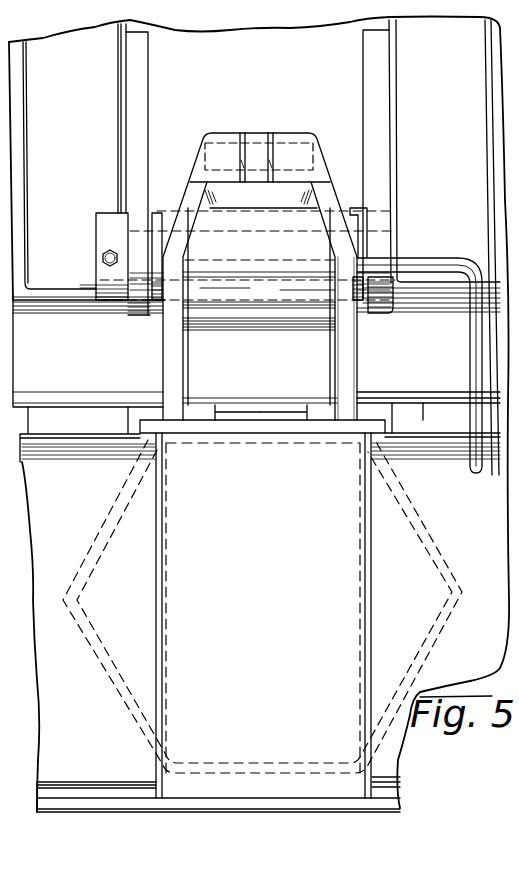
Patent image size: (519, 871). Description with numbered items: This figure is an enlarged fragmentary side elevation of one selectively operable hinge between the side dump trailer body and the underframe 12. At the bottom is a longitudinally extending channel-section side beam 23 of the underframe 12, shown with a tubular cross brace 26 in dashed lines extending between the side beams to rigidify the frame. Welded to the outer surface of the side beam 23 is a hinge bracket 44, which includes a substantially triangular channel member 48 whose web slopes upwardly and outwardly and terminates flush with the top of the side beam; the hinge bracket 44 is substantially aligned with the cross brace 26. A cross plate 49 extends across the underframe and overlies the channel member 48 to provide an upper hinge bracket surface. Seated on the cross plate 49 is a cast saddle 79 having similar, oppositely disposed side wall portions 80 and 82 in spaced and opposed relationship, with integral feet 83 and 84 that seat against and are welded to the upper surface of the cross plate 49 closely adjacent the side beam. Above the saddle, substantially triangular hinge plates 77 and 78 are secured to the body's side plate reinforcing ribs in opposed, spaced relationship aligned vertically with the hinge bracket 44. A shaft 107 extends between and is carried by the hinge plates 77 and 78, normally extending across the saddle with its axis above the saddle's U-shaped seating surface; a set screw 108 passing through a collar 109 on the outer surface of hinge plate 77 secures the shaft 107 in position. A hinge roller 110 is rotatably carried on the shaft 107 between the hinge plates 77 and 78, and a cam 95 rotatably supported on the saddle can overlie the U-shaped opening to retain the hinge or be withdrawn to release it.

The underframe 12 is at (33, 593).
The side beam 23 is at (48, 697).
The cross brace 26 is at (425, 522).
The hinge bracket 44 is at (156, 620).
The channel member 48 is at (357, 596).
The cross plate 49 is at (290, 440).
The hinge plate 77 is at (133, 124).
The hinge plate 78 is at (386, 139).
The saddle 79 is at (362, 380).
The side wall portion 80 is at (168, 352).
The side wall portion 82 is at (352, 350).
The foot 83 is at (205, 408).
The foot 84 is at (318, 406).
The cam 95 is at (257, 134).
The shaft 107 is at (158, 216).
The set screw 108 is at (103, 255).
The collar 109 is at (102, 213).
The hinge roller 110 is at (362, 210).